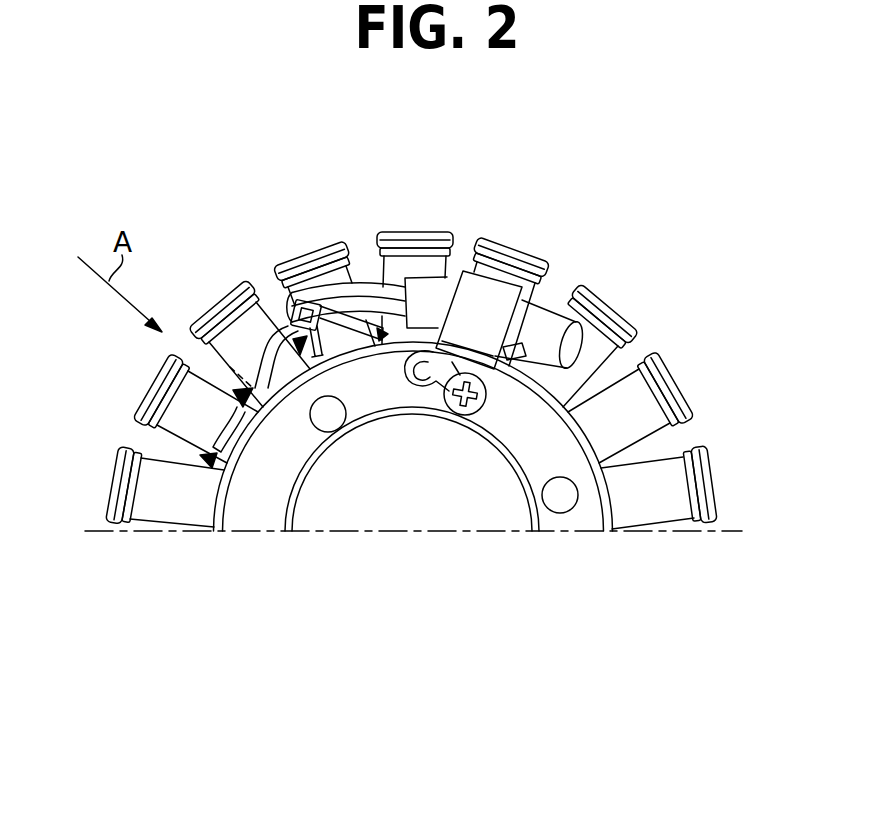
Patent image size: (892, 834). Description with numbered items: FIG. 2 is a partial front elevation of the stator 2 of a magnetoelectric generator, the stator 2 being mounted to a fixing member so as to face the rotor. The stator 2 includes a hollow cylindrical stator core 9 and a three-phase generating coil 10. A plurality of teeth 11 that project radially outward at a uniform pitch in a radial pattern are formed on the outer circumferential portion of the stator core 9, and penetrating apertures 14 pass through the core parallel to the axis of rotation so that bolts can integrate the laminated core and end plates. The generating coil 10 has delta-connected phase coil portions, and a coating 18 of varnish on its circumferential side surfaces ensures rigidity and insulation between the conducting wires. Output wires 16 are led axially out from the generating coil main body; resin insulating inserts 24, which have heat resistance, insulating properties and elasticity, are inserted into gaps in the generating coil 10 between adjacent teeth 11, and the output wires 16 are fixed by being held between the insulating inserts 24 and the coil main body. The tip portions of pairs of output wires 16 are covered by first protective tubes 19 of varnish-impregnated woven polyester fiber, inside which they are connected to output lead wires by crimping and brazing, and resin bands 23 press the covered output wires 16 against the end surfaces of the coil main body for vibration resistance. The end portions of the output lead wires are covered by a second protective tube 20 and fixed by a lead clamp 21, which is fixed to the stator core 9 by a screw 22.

The stator 2 is at (258, 504).
The stator core 9 is at (580, 517).
The three-phase generating coil 10 is at (657, 508).
The teeth 11 is at (527, 252).
The penetrating apertures 14 is at (330, 416).
The output wires 16 is at (240, 318).
The coating 18 is at (167, 500).
The first protective tubes 19 is at (272, 330).
The second protective tube 20 is at (560, 330).
The lead clamp 21 is at (480, 308).
The screw 22 is at (461, 417).
The resin bands 23 is at (367, 323).
The insulating inserts 24 is at (198, 454).